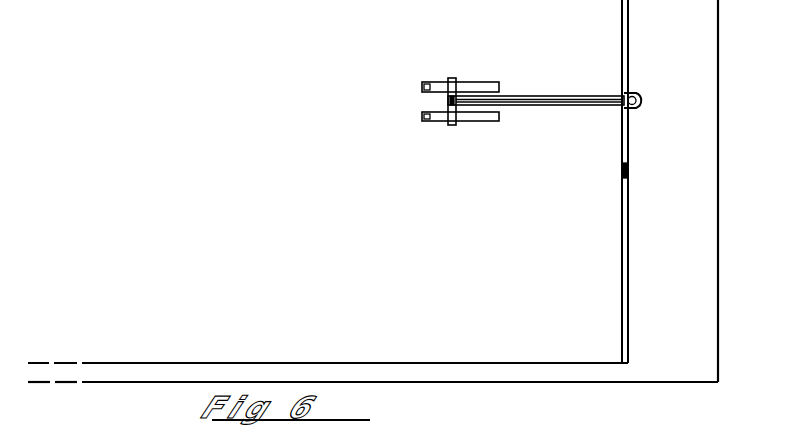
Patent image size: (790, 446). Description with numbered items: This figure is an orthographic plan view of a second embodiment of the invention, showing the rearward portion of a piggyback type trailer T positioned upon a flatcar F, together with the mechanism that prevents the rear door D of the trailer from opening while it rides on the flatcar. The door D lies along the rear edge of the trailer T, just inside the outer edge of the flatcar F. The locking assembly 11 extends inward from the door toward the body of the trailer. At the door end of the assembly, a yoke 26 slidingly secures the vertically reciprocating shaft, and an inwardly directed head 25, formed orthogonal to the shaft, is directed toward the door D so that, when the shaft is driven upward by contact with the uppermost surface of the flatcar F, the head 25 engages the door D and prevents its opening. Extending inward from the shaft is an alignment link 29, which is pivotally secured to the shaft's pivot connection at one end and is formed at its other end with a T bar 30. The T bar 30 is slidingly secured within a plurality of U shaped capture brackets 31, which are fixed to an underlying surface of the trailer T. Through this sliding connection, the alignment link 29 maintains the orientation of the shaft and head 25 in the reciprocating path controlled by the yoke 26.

The latch assembly 11 is at (543, 84).
The head 25 is at (620, 108).
The yoke 26 is at (638, 92).
The alignment link 29 is at (529, 108).
The T bar 30 is at (448, 102).
The U shaped capture brackets 31 is at (437, 81).
The door D is at (628, 71).
The flatcar F is at (710, 310).
The trailer T is at (584, 351).